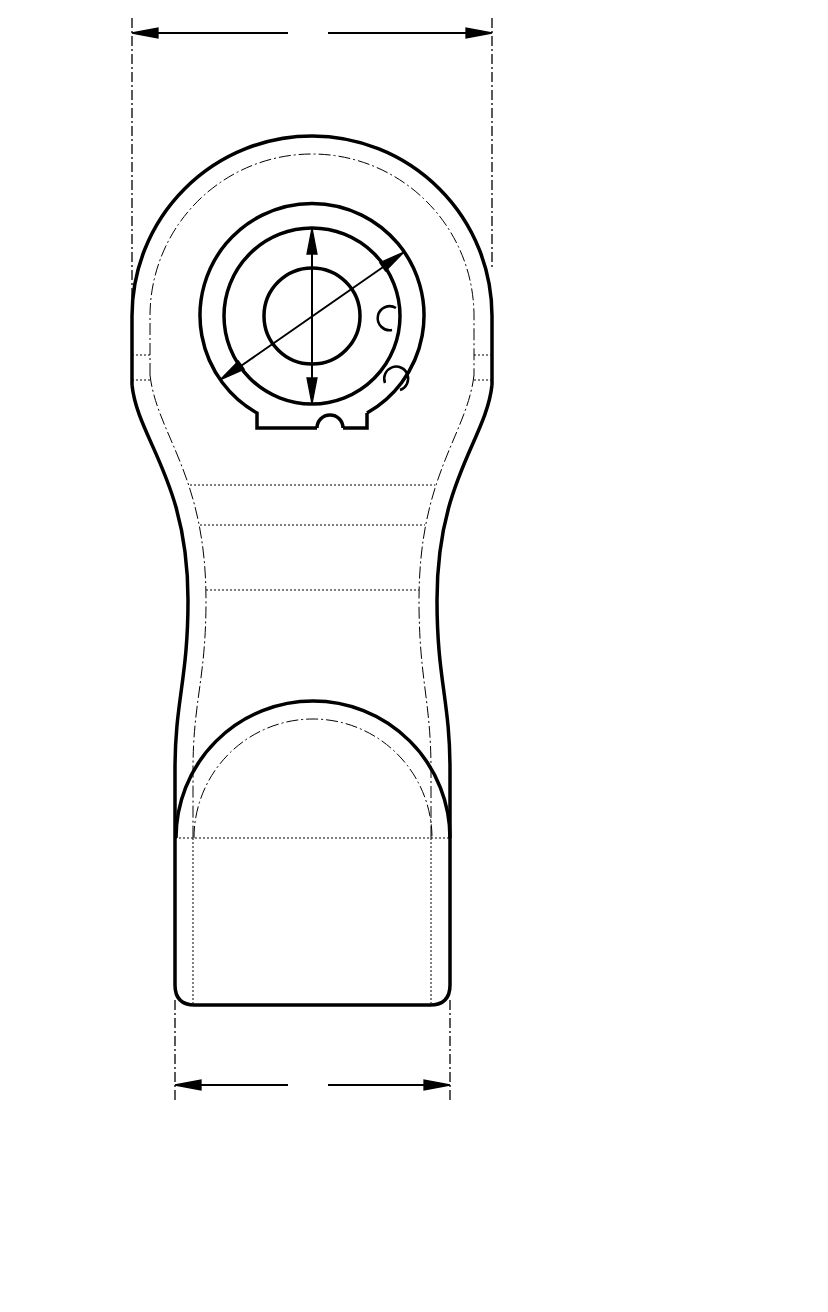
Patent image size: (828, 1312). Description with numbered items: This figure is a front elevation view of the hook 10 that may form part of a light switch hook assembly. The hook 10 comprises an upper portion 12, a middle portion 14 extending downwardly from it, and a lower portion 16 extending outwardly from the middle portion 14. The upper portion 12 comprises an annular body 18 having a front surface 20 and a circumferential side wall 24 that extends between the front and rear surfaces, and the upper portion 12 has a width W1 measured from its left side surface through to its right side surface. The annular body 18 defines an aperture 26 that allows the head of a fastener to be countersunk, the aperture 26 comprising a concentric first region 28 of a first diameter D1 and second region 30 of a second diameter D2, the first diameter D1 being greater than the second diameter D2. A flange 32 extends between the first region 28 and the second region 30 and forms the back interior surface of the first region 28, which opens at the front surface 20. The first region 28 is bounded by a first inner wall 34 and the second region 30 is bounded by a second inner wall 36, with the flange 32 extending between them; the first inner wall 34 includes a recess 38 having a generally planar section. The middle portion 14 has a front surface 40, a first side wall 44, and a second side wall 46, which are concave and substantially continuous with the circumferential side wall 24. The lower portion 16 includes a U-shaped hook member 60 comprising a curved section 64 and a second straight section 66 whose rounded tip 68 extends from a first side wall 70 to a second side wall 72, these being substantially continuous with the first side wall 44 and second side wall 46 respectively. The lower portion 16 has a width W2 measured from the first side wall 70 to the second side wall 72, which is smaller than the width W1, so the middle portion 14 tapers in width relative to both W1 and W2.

The hook 10 is at (552, 160).
The upper portion 12 is at (518, 281).
The middle portion 14 is at (478, 605).
The lower portion 16 is at (486, 896).
The annular body 18 is at (352, 128).
The front surface 20 is at (175, 347).
The circumferential side wall 24 is at (227, 158).
The aperture 26 is at (518, 379).
The first region 28 is at (515, 410).
The second region 30 is at (518, 327).
The flange 32 is at (243, 390).
The first inner wall 34 is at (385, 383).
The second inner wall 36 is at (392, 330).
The recess 38 is at (343, 424).
The front surface 40 is at (248, 633).
The first side wall 44 is at (187, 655).
The second side wall 46 is at (438, 652).
The hook member 60 is at (378, 920).
The curved section 64 is at (408, 945).
The second straight section 66 is at (303, 762).
The tip 68 is at (353, 707).
The first side wall 70 is at (175, 838).
The second side wall 72 is at (450, 838).
The first diameter D1 is at (243, 347).
The second diameter D2 is at (312, 290).
The width of upper portion W1 is at (312, 159).
The width of lower portion W2 is at (312, 1050).